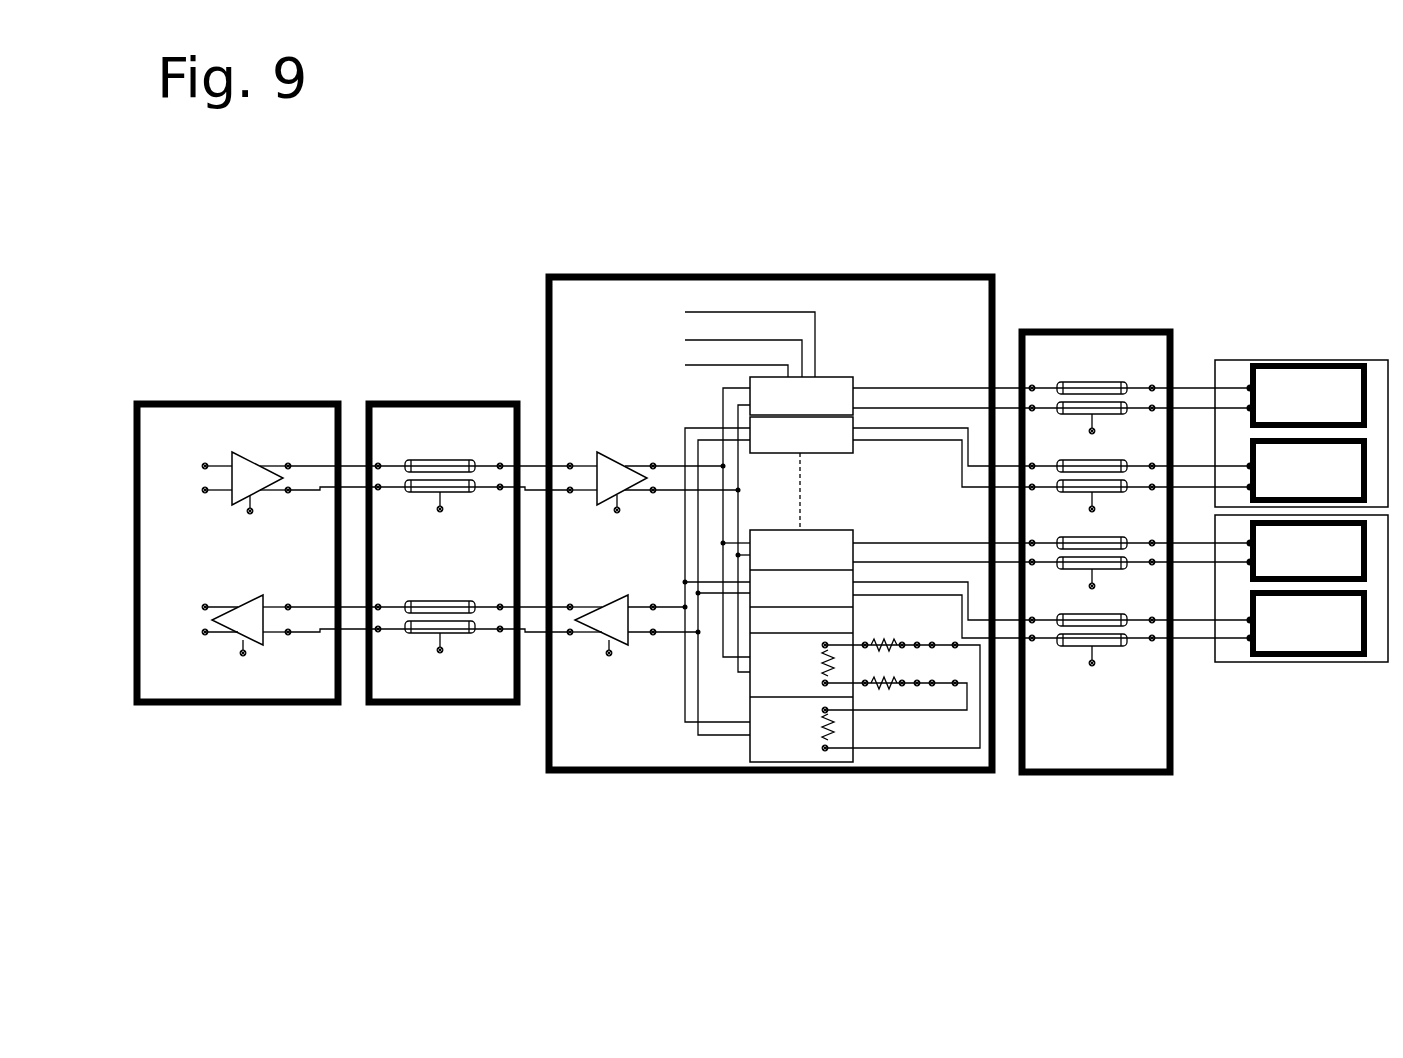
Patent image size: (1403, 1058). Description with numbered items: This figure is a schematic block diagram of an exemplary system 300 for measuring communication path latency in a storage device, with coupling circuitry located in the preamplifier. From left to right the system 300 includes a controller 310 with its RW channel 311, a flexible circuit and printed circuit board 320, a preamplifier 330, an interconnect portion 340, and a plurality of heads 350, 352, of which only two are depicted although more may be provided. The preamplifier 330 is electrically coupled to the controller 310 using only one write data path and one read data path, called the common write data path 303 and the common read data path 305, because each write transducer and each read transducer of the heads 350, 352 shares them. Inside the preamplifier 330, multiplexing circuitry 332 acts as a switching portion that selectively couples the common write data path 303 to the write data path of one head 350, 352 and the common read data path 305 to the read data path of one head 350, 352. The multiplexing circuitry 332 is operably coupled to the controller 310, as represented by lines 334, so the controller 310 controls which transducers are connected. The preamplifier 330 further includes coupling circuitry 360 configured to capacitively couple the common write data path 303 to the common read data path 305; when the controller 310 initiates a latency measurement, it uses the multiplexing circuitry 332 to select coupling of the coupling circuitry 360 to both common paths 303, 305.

The system 300 is at (170, 210).
The common write data path 303 is at (838, 176).
The common read data path 305 is at (838, 841).
The controller 310 is at (240, 400).
The RW channel 311 is at (166, 435).
The flexible circuit and printed circuit board 320 is at (413, 400).
The preamplifier 330 is at (560, 273).
The multiplexing circuitry 332 is at (870, 330).
The lines 334 is at (712, 366).
The interconnect portion 340 is at (1078, 328).
The head 350 is at (1235, 360).
The head 352 is at (1235, 662).
The coupling circuitry 360 is at (912, 718).